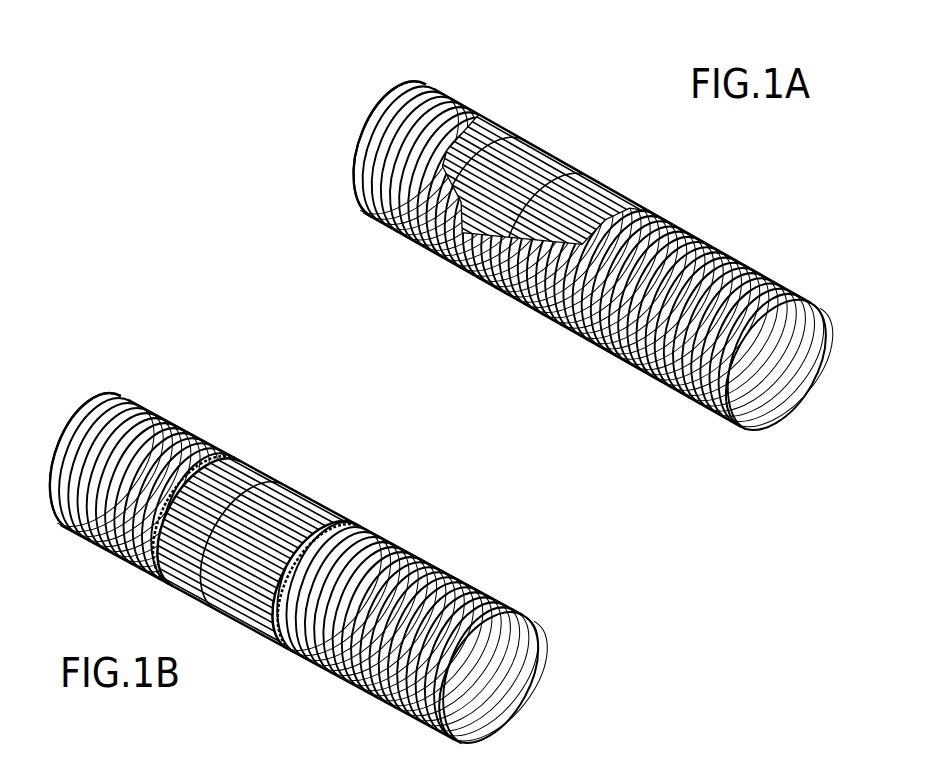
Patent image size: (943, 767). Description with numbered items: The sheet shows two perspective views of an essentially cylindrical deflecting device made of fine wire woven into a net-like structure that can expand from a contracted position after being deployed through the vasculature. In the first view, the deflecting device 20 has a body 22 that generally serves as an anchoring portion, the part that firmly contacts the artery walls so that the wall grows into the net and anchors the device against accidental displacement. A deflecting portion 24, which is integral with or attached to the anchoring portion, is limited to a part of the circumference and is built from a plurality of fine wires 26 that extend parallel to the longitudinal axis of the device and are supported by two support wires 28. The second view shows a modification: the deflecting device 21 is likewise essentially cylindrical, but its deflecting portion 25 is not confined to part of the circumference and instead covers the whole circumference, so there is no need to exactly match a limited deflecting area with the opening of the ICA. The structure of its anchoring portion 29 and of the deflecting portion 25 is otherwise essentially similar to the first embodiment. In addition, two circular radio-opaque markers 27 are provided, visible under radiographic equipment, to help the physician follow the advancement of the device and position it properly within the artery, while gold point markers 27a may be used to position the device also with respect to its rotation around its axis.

In FIG. 1A, the deflecting device 20 is at (754, 189).
In FIG. 1B, the deflecting device 21 is at (232, 624).
In FIG. 1A, the body 22 is at (580, 343).
In FIG. 1A, the deflecting portion 24 is at (547, 150).
In FIG. 1B, the deflecting portion 24 is at (360, 480).
In FIG. 1B, the deflecting portion 25 is at (345, 533).
In FIG. 1A, the fine wires 26 is at (495, 258).
In FIG. 1B, the markers 27 is at (138, 560).
In FIG. 1B, the markers 27a is at (150, 566).
In FIG. 1A, the support wires 28 is at (520, 145).
In FIG. 1B, the anchoring portion 29 is at (176, 418).